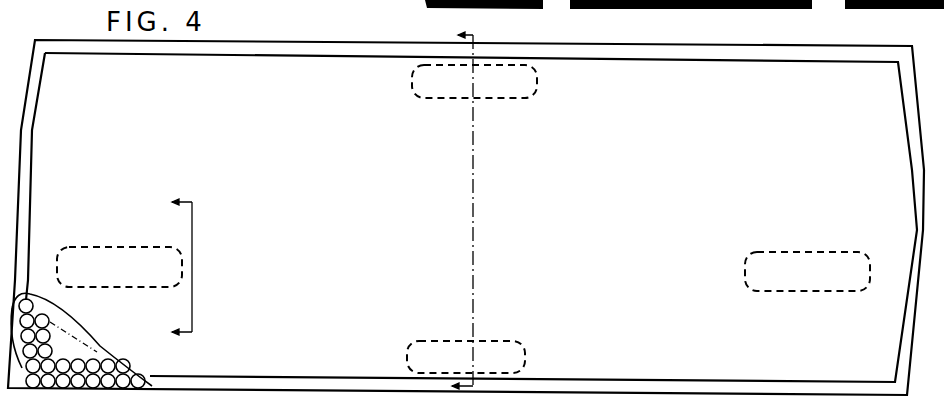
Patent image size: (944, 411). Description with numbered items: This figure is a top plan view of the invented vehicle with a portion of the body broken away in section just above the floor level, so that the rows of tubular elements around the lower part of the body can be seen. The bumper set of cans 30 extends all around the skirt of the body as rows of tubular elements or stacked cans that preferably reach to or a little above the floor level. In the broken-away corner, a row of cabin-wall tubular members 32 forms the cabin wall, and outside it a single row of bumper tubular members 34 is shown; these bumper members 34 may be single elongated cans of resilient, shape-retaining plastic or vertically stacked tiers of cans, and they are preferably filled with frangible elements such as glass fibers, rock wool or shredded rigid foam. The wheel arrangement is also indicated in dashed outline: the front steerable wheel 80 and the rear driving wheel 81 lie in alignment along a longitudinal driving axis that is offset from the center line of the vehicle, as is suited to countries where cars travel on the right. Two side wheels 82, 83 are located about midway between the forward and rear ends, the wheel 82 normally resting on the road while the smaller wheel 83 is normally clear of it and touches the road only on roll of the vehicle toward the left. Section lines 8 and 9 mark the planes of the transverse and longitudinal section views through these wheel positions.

The bumper set of cans 30 is at (258, 40).
The cabin-wall tubular members 32 is at (48, 327).
The bumper tubular members 34 is at (34, 300).
The front steerable wheel 80 is at (146, 250).
The rear driving wheel 81 is at (836, 255).
The side wheel 82 is at (494, 100).
The side wheel 83 is at (428, 341).
The section line 8 is at (453, 209).
The section line 9 is at (172, 268).